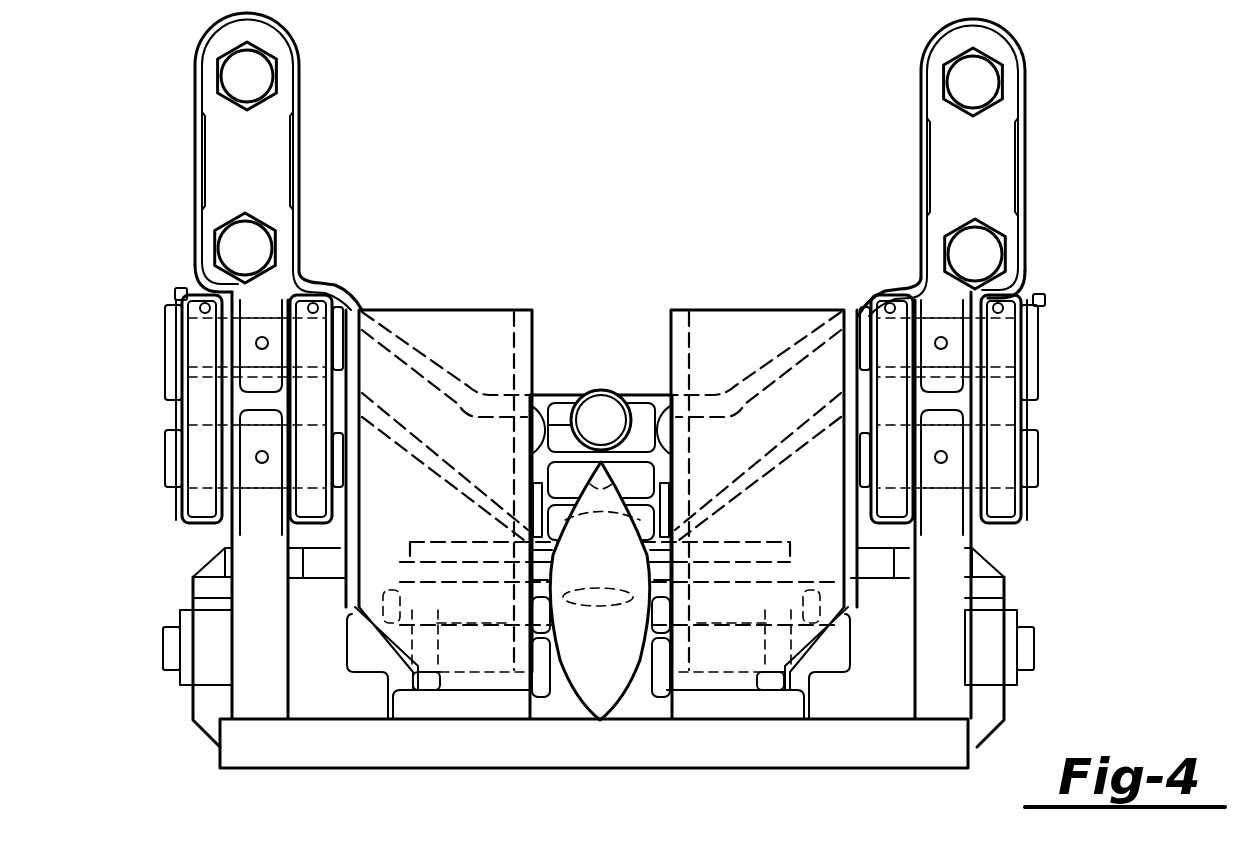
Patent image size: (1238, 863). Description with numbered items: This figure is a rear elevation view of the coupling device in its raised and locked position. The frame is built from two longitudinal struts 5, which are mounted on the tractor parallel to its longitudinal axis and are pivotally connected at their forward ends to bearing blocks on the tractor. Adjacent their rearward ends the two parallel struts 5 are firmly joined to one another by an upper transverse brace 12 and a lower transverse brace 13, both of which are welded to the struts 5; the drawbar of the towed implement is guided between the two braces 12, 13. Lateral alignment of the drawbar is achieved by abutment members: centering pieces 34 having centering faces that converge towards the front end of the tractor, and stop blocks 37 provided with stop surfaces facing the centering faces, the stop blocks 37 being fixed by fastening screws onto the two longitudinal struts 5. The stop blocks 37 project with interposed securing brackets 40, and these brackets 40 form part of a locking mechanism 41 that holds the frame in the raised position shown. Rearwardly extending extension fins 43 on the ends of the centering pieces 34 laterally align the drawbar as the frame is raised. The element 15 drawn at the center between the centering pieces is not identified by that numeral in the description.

The extension fins 43 is at (748, 343).
The locking mechanism 41 is at (306, 507).
The securing brackets 40 is at (256, 598).
The upper transverse brace 12 is at (878, 568).
The longitudinal struts 5 is at (190, 705).
The stop blocks 37 is at (327, 680).
The centering pieces 34 is at (473, 690).
The blade 15 is at (606, 692).
The lower transverse brace 13 is at (947, 752).